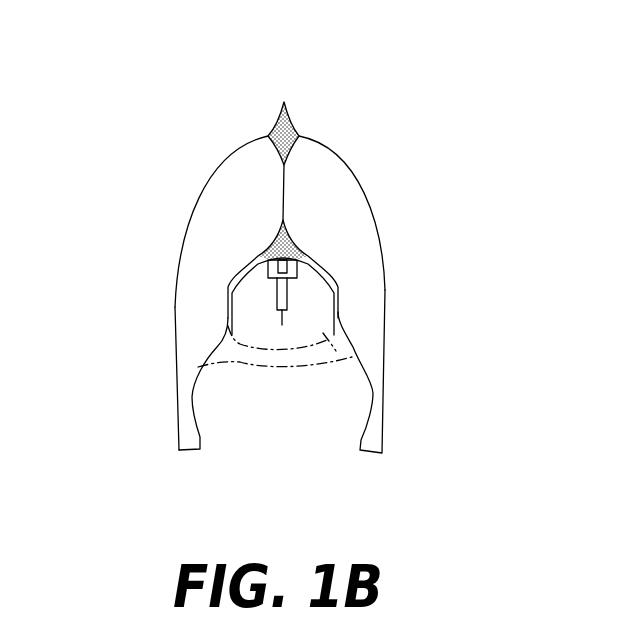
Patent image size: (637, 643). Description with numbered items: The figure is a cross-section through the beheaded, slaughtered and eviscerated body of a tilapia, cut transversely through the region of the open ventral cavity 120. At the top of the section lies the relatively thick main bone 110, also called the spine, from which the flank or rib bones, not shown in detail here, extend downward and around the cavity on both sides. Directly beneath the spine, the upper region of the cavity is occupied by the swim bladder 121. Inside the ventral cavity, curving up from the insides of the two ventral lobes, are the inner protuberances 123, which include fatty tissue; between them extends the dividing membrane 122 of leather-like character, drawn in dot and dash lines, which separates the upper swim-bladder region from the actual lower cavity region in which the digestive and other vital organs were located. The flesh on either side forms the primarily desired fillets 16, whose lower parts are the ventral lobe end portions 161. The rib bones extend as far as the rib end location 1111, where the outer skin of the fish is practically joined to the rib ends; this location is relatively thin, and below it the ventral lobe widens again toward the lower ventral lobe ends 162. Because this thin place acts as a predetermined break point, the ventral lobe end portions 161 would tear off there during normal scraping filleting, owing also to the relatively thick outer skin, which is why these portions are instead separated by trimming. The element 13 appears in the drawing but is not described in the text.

The tip / distal end member 13 is at (277, 119).
The fillet 16 is at (213, 181).
The main bone 110 is at (293, 243).
The swim bladder 121 is at (248, 292).
The ventral lobe end portion 161 is at (192, 293).
The lower ventral lobe end 162 is at (188, 438).
The rib end location 1111 is at (380, 412).
The inner protuberances 123 is at (215, 345).
The dividing membrane 122 is at (240, 368).
The ventral cavity 120 is at (352, 404).